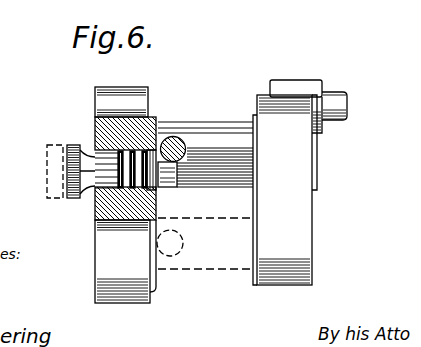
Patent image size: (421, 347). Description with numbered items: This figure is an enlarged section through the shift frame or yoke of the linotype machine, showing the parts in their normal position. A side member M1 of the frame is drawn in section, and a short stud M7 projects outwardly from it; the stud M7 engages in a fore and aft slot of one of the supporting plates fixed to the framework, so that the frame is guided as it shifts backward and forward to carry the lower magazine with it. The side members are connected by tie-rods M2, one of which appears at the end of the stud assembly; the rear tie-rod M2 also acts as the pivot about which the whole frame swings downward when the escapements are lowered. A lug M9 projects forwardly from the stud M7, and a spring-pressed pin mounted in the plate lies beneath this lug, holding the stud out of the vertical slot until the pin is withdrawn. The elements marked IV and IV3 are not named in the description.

The gear block / hub IV is at (138, 94).
The knurled nut IV3 is at (70, 162).
The lug M9 is at (183, 136).
The short stud M7 is at (243, 121).
The side member M1 is at (312, 207).
The tie-rod M2 is at (338, 103).